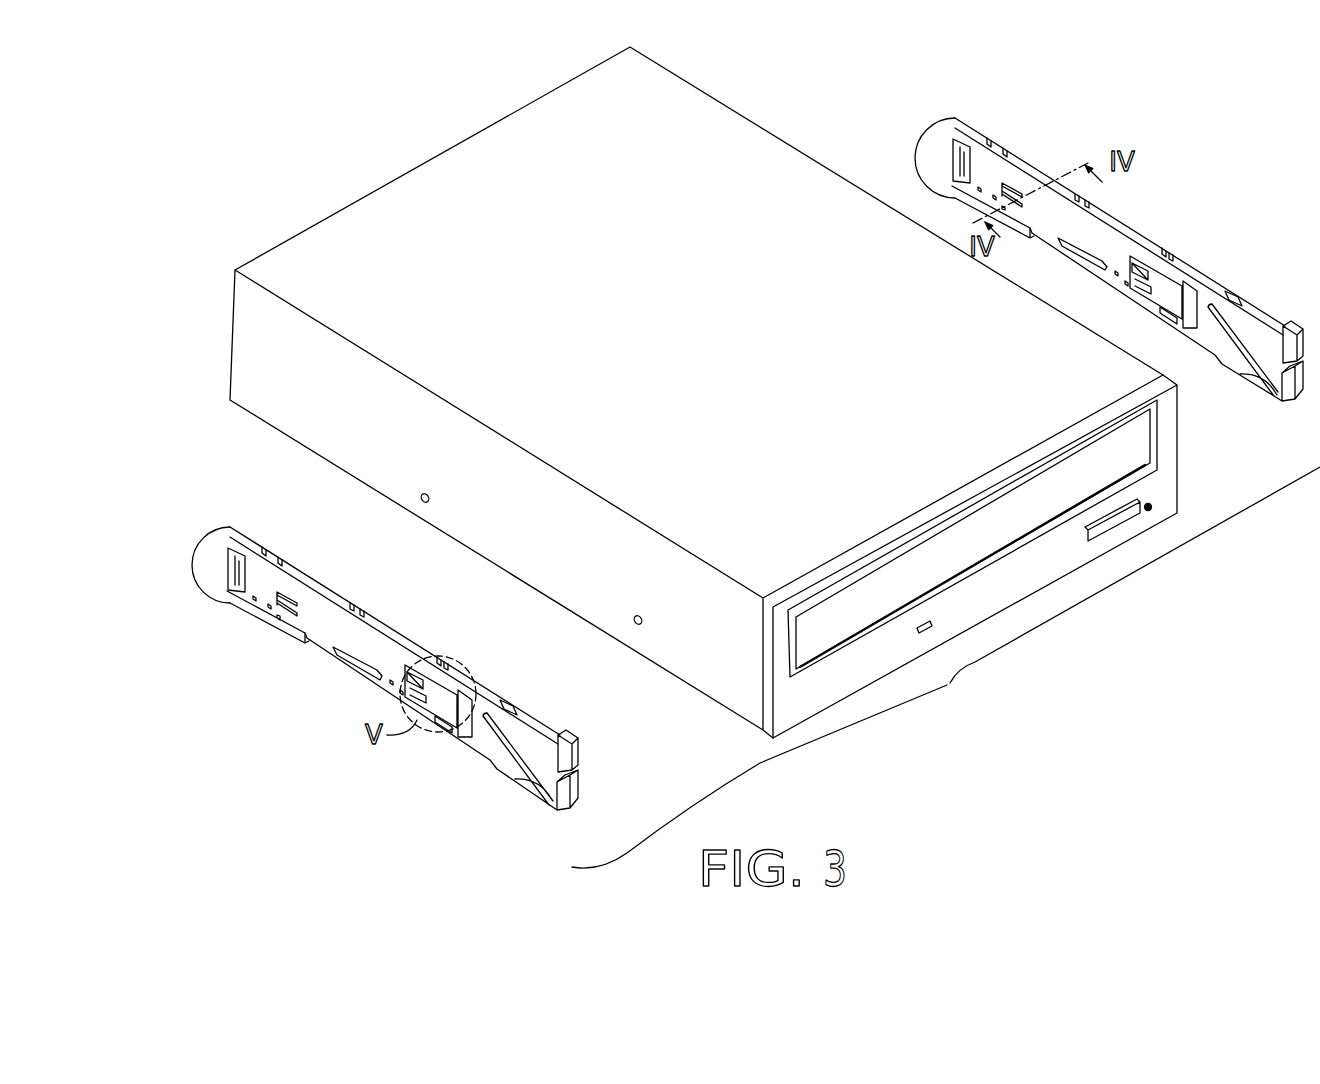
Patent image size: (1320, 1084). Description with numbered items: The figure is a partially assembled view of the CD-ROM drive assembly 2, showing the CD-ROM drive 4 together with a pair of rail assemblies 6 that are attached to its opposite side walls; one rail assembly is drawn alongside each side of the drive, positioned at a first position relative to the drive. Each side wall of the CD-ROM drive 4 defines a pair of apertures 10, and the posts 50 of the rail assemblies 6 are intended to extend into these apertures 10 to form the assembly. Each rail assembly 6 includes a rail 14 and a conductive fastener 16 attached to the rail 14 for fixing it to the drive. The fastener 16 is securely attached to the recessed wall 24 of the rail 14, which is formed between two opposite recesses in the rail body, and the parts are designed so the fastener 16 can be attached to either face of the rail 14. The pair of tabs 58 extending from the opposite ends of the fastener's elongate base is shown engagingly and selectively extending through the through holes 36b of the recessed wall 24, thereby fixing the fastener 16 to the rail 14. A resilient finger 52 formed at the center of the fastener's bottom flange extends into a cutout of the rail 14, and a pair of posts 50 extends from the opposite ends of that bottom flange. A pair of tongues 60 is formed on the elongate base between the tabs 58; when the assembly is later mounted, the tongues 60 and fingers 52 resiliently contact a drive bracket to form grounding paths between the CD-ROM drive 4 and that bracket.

The CD-ROM drive assembly 2 is at (946, 621).
The CD-ROM drive 4 is at (408, 171).
The rail assembly 6 is at (1253, 297).
The aperture 10 is at (420, 506).
The rail 14 is at (212, 567).
The conductive fastener 16 is at (1093, 215).
The recessed wall 24 is at (237, 578).
The through hole 36b is at (1165, 318).
The post 50 is at (1183, 326).
The resilient finger 52 is at (1093, 272).
The tab 58 is at (1192, 290).
The tongue 60 is at (274, 618).